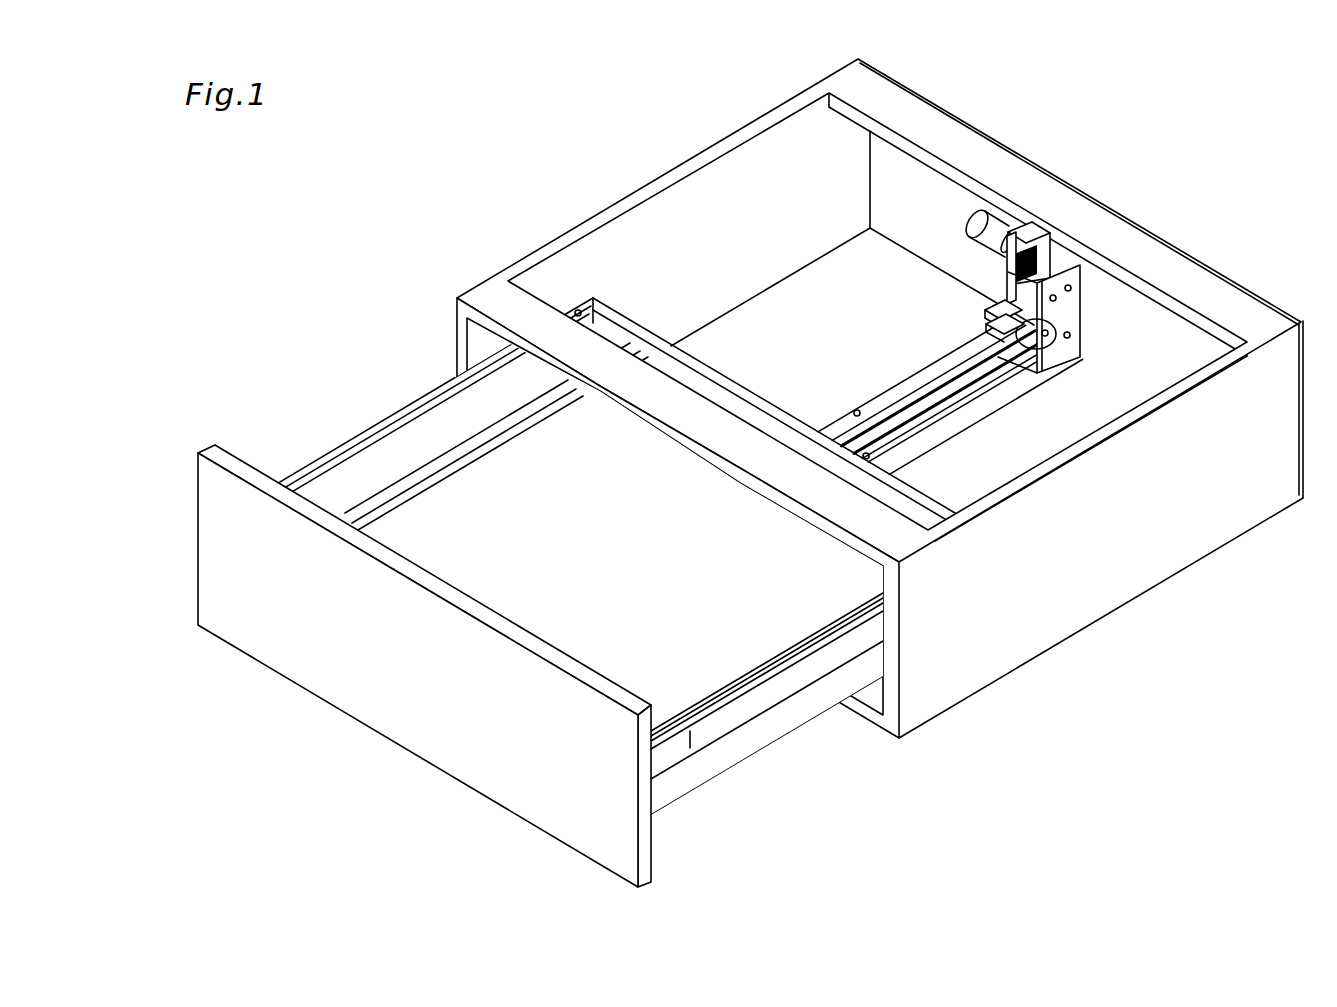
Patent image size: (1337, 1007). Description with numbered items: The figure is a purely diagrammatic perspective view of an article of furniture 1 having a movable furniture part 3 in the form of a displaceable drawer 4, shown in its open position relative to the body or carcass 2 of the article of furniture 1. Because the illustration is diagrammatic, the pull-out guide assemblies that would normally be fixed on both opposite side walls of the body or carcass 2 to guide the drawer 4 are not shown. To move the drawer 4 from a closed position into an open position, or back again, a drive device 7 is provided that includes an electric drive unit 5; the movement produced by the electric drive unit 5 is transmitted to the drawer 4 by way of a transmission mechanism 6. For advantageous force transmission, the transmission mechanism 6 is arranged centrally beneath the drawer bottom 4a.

The article of furniture 1 is at (447, 266).
The body or carcass 2 is at (958, 141).
The movable furniture part 3 is at (592, 652).
The drawer 4 is at (347, 700).
The drawer bottom 4a is at (684, 561).
The electric drive unit 5 is at (1012, 232).
The transmission mechanism 6 is at (968, 441).
The drive device 7 is at (962, 317).